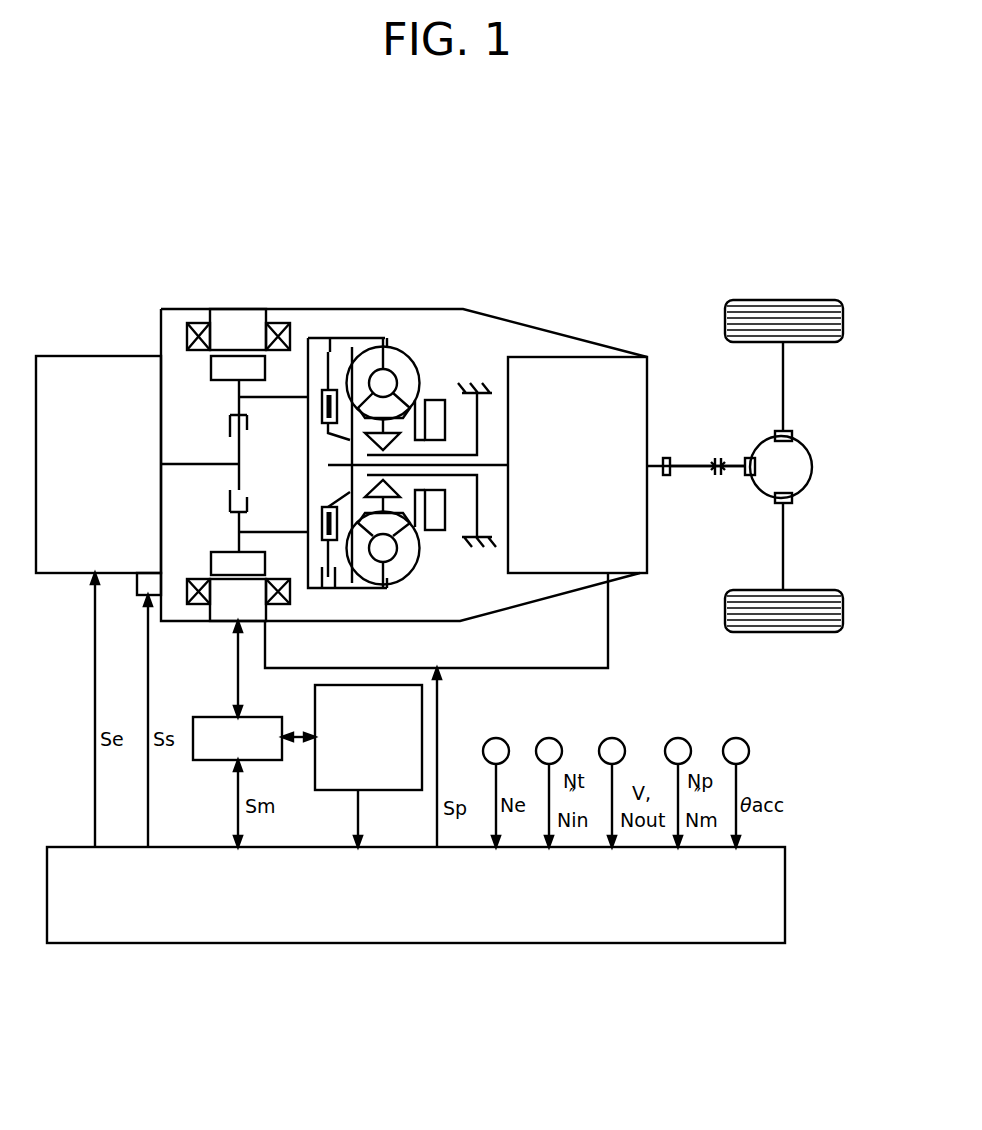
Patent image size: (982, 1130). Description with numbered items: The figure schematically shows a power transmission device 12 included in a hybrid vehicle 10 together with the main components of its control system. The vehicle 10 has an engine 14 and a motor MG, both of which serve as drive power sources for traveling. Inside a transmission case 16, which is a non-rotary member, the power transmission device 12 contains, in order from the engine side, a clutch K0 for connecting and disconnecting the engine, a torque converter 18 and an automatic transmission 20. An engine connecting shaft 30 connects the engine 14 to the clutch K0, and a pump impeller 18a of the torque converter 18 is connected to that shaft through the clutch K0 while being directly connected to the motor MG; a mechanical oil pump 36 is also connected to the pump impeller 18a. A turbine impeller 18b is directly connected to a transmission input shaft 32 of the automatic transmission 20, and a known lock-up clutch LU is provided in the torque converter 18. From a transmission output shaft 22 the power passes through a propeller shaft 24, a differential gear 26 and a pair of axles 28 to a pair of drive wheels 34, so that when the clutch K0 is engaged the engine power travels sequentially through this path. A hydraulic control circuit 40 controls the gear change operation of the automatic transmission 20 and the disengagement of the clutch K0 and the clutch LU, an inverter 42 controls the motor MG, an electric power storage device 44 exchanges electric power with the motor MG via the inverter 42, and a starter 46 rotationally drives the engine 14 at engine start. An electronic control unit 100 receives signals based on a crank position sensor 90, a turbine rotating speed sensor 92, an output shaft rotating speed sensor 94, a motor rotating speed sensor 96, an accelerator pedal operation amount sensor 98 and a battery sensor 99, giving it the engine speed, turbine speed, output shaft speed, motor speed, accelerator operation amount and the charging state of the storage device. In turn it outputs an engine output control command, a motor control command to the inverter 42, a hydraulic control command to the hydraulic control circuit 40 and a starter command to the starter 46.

The vehicle 10 is at (590, 210).
The power transmission device 12 is at (392, 259).
The engine 14 is at (62, 362).
The transmission case 16 is at (414, 309).
The torque converter 18 is at (392, 448).
The pump impeller 18a is at (403, 560).
The turbine impeller 18b is at (357, 563).
The automatic transmission 20 is at (634, 413).
The transmission output shaft 22 is at (653, 462).
The propeller shaft 24 is at (697, 475).
The differential gear 26 is at (797, 450).
The axles 28 is at (783, 385).
The engine connecting shaft 30 is at (199, 462).
The transmission input shaft 32 is at (495, 470).
The drive wheels 34 is at (726, 322).
The mechanical oil pump 36 is at (438, 530).
The hydraulic control circuit 40 is at (604, 632).
The inverter 42 is at (193, 750).
The electric power storage device 44 is at (315, 697).
The starter 46 is at (138, 584).
The crank position sensor 90 is at (500, 738).
The turbine rotating speed sensor 92 is at (553, 738).
The output shaft rotating speed sensor 94 is at (616, 738).
The motor rotating speed sensor 96 is at (682, 738).
The accelerator pedal operation amount sensor 98 is at (740, 738).
The battery sensor 99 is at (325, 790).
The electronic control unit 100 is at (768, 860).
The clutch for connecting/disconnecting the engine K0 is at (247, 503).
The lock-up clutch LU is at (340, 348).
The motor MG is at (247, 465).